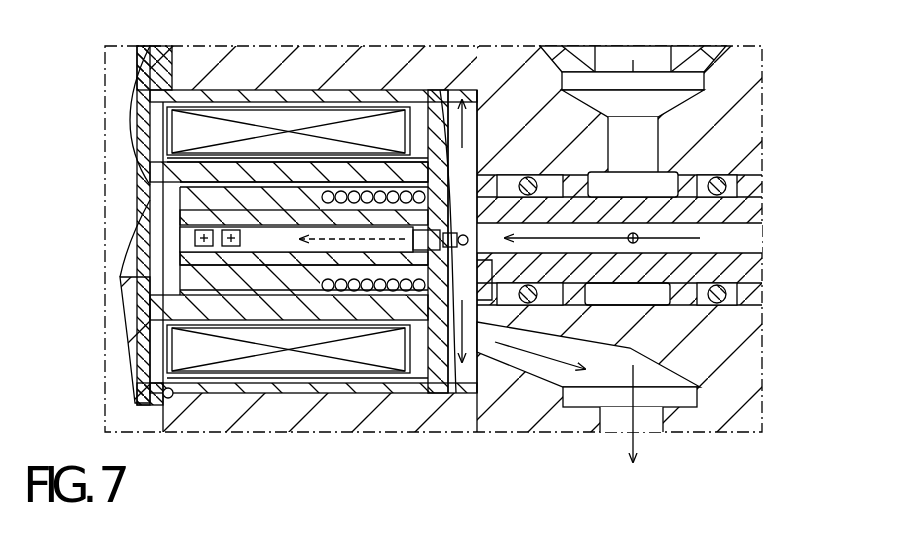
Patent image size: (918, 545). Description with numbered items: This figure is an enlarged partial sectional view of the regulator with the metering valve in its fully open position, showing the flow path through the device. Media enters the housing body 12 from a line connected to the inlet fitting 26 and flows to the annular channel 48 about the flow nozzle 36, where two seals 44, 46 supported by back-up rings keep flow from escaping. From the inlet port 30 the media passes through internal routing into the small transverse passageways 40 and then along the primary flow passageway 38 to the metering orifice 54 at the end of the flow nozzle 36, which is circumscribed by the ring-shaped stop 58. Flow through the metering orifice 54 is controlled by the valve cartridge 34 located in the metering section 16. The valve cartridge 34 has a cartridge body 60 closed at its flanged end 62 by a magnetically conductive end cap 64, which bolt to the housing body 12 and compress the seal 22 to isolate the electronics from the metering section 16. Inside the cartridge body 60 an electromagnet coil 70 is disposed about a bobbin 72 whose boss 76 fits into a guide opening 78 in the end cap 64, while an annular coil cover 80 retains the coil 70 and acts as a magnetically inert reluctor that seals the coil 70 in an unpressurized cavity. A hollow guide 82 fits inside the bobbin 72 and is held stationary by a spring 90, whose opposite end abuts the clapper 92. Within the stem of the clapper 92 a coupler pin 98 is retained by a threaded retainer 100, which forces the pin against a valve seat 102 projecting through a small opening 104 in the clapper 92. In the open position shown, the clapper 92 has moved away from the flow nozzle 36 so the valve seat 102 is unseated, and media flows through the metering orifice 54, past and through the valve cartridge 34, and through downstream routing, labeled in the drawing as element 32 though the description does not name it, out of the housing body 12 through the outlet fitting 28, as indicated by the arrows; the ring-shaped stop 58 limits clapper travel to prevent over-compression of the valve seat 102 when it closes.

The housing body 12 is at (512, 54).
The metering section 16 is at (461, 393).
The seal 22 is at (158, 88).
The inlet fitting 26 is at (679, 46).
The outlet fitting 28 is at (680, 420).
The inlet port 30 is at (707, 80).
The outlet channel 32 is at (700, 394).
The valve cartridge 34 is at (313, 58).
The flow nozzle 36 is at (760, 187).
The primary flow passageway 38 is at (740, 226).
The transverse passageways 40 is at (639, 239).
The seal 44 is at (553, 185).
The seal 46 is at (713, 190).
The annular channel 48 is at (660, 306).
The metering orifice 54 is at (472, 256).
The ring-shaped stop 58 is at (490, 380).
The cartridge body 60 is at (195, 90).
The flanged end 62 is at (160, 64).
The end cap 64 is at (140, 183).
The electromagnet coil 70 is at (367, 62).
The bobbin 72 is at (270, 330).
The boss 76 is at (125, 258).
The guide opening 78 is at (122, 295).
The coil cover 80 is at (424, 393).
The guide 82 is at (195, 332).
The spring 90 is at (328, 312).
The clapper 92 is at (440, 90).
The coupler pin 98 is at (282, 218).
The threaded retainer 100 is at (142, 168).
The valve seat 102 is at (485, 185).
The opening 104 is at (480, 170).